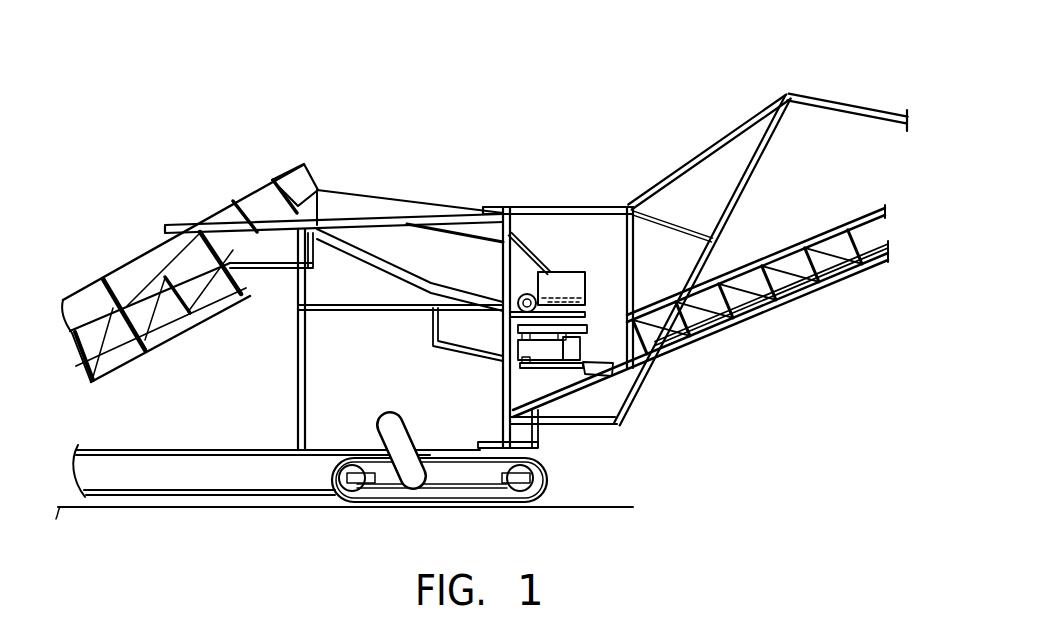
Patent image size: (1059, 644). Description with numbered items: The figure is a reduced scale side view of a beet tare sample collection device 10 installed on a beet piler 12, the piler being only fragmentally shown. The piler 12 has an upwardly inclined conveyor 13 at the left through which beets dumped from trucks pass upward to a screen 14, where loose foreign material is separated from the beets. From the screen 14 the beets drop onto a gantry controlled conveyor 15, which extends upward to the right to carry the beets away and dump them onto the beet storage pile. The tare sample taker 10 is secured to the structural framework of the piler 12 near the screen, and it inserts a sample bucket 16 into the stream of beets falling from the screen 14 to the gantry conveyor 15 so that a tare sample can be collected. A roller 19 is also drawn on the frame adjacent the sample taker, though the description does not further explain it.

The beet tare sample collection device 10 is at (565, 280).
The beet piler 12 is at (529, 193).
The upwardly inclined conveyor 13 is at (125, 262).
The screen 14 is at (376, 238).
The gantry controlled conveyor 15 is at (757, 321).
The sample bucket 16 is at (607, 374).
The roller 19 is at (520, 296).